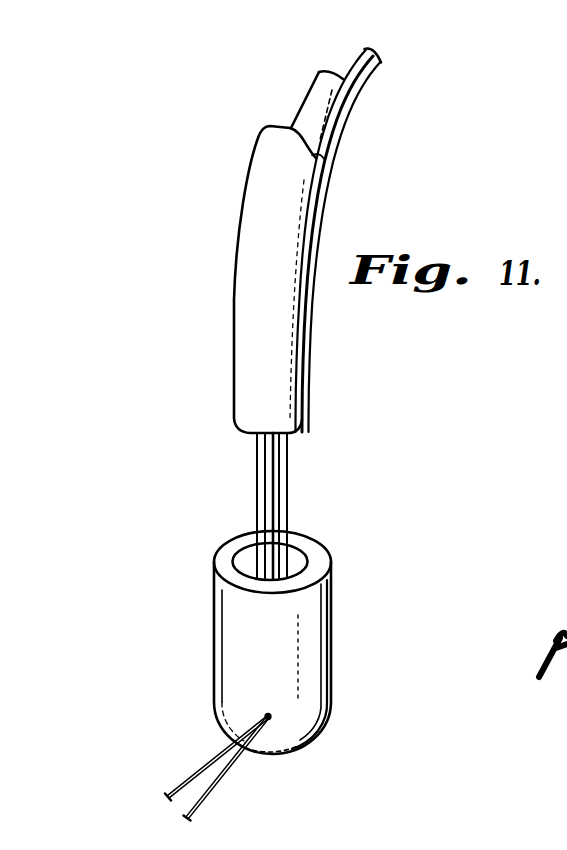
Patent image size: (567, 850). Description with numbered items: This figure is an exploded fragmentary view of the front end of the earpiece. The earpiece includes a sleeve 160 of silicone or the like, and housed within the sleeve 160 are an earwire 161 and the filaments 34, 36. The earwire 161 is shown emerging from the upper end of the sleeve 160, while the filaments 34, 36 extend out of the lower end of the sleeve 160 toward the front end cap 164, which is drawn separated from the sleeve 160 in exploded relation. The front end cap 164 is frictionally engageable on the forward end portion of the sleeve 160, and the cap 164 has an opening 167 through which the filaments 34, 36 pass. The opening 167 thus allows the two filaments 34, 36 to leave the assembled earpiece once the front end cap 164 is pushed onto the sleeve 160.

The sleeve 160 is at (218, 282).
The earwire 161 is at (317, 98).
The filament 34 is at (264, 469).
The filament 36 is at (280, 508).
The front end cap 164 is at (208, 645).
The opening 167 is at (271, 718).